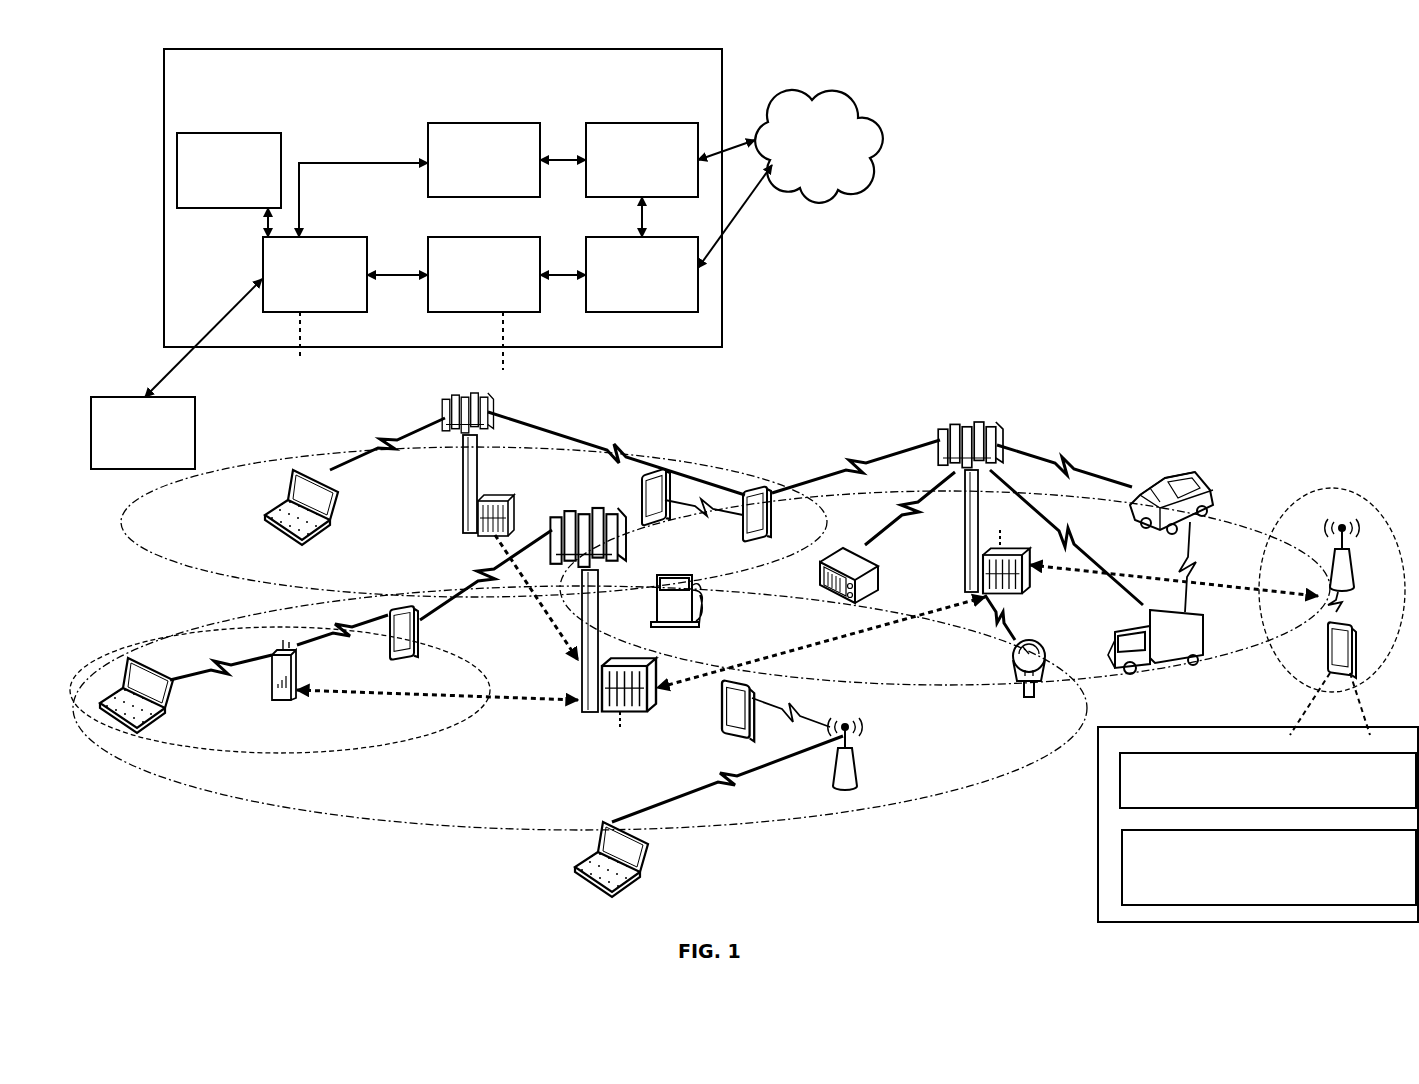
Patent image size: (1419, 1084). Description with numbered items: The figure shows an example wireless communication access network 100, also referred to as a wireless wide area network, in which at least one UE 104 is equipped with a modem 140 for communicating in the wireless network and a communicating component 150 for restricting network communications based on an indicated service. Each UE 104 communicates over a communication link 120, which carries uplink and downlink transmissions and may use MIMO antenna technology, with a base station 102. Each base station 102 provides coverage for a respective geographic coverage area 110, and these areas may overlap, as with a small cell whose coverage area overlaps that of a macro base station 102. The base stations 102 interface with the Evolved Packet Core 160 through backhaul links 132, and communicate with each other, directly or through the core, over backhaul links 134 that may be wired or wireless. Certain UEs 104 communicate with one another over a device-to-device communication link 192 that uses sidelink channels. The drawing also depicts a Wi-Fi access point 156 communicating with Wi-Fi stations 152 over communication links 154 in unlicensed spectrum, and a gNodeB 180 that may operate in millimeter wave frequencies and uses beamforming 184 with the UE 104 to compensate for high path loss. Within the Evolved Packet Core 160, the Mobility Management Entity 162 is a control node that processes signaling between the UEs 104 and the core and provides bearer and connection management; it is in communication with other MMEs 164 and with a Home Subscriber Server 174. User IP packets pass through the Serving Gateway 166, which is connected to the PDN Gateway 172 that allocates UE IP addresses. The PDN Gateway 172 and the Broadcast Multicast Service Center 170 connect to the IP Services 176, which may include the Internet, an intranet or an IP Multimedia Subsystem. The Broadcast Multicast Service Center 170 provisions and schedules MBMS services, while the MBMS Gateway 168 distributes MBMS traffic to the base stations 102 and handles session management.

The wireless communication access network 100 is at (118, 106).
The base station 102 is at (466, 528).
The UE 104 is at (320, 545).
The geographic coverage area 110 is at (180, 580).
The communication link 120 is at (384, 438).
The backhaul link 132 is at (300, 360).
The backhaul link 134 is at (540, 625).
The modem 140 is at (1258, 797).
The communicating component 150 is at (1270, 867).
The Wi-Fi station 152 is at (724, 710).
The communication link 154 is at (796, 704).
The Wi-Fi access point 156 is at (845, 788).
The Evolved Packet Core 160 is at (443, 198).
The Mobility Management Entity 162 is at (326, 208).
The other MMEs 164 is at (220, 129).
The Serving Gateway 166 is at (526, 240).
The MBMS Gateway 168 is at (480, 122).
The Broadcast Multicast Service Center 170 is at (638, 122).
The PDN Gateway 172 is at (654, 236).
The Home Subscriber Server 174 is at (122, 393).
The IP Services 176 is at (796, 88).
The gNodeB 180 is at (1318, 506).
The beamforming 184 is at (1344, 600).
The device-to-device communication link 192 is at (712, 508).